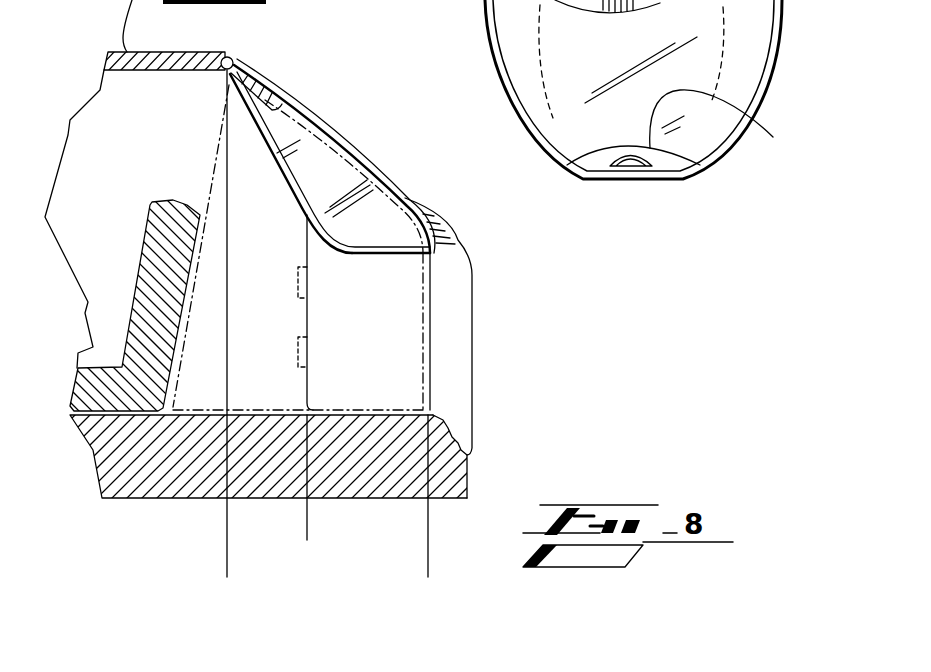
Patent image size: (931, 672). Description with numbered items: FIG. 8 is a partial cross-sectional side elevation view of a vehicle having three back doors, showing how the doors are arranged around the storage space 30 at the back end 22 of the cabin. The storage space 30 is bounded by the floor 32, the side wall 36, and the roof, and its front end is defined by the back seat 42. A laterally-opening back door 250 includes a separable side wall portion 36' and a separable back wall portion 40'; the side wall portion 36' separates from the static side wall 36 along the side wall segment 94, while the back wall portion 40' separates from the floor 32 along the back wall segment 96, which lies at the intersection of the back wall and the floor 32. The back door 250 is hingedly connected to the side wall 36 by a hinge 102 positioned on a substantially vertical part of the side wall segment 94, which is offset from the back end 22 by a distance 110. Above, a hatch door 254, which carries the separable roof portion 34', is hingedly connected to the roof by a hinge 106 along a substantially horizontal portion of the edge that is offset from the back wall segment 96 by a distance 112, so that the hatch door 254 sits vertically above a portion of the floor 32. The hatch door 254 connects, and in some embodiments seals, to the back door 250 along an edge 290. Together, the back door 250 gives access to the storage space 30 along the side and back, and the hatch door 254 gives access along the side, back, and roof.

The hinge 106 is at (221, 67).
The side wall segment 94 is at (262, 137).
The back seat 42 is at (160, 272).
The side wall 36 is at (301, 241).
The hinge 102 is at (298, 283).
The separable side wall portion 36' is at (301, 331).
The separable roof portion 34' is at (333, 148).
The storage space 30 is at (370, 164).
The edge 290 is at (385, 247).
The separable back wall portion 40' is at (610, 272).
The back end 22 is at (545, 290).
The hatch door 254 is at (356, 112).
The back door 250 is at (512, 384).
The back wall segment 96 is at (467, 454).
The floor 32 is at (258, 416).
The distance 110 is at (427, 533).
The distance 112 is at (427, 570).